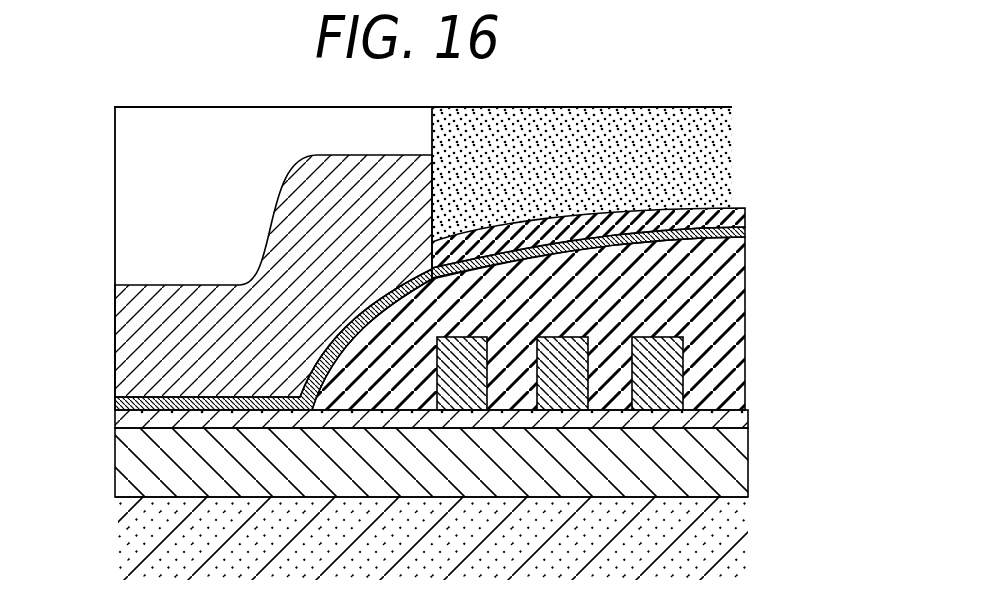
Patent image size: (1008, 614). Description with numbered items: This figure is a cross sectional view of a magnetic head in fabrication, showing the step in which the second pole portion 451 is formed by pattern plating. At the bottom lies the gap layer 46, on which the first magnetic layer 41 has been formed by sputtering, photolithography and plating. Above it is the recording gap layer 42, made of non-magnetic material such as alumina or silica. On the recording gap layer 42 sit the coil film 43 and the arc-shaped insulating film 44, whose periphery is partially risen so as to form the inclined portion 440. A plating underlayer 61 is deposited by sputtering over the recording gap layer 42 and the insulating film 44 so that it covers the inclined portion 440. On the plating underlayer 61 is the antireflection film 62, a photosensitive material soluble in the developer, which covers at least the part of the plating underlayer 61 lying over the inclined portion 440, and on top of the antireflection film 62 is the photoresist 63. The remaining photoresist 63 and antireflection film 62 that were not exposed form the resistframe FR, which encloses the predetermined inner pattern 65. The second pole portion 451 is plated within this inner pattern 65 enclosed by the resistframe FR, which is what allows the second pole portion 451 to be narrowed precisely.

The first magnetic layer 41 is at (723, 463).
The recording gap layer 42 is at (723, 415).
The coil film 43 is at (683, 377).
The insulating film 44 is at (728, 273).
The inclined portion 440 is at (363, 310).
The second pole portion 451 is at (137, 357).
The gap layer 46 is at (723, 538).
The plating underlayer 61 is at (749, 231).
The antireflection film 62 is at (737, 215).
The photoresist 63 is at (718, 147).
The inner pattern 65 is at (127, 208).
The resistframe FR is at (104, 135).